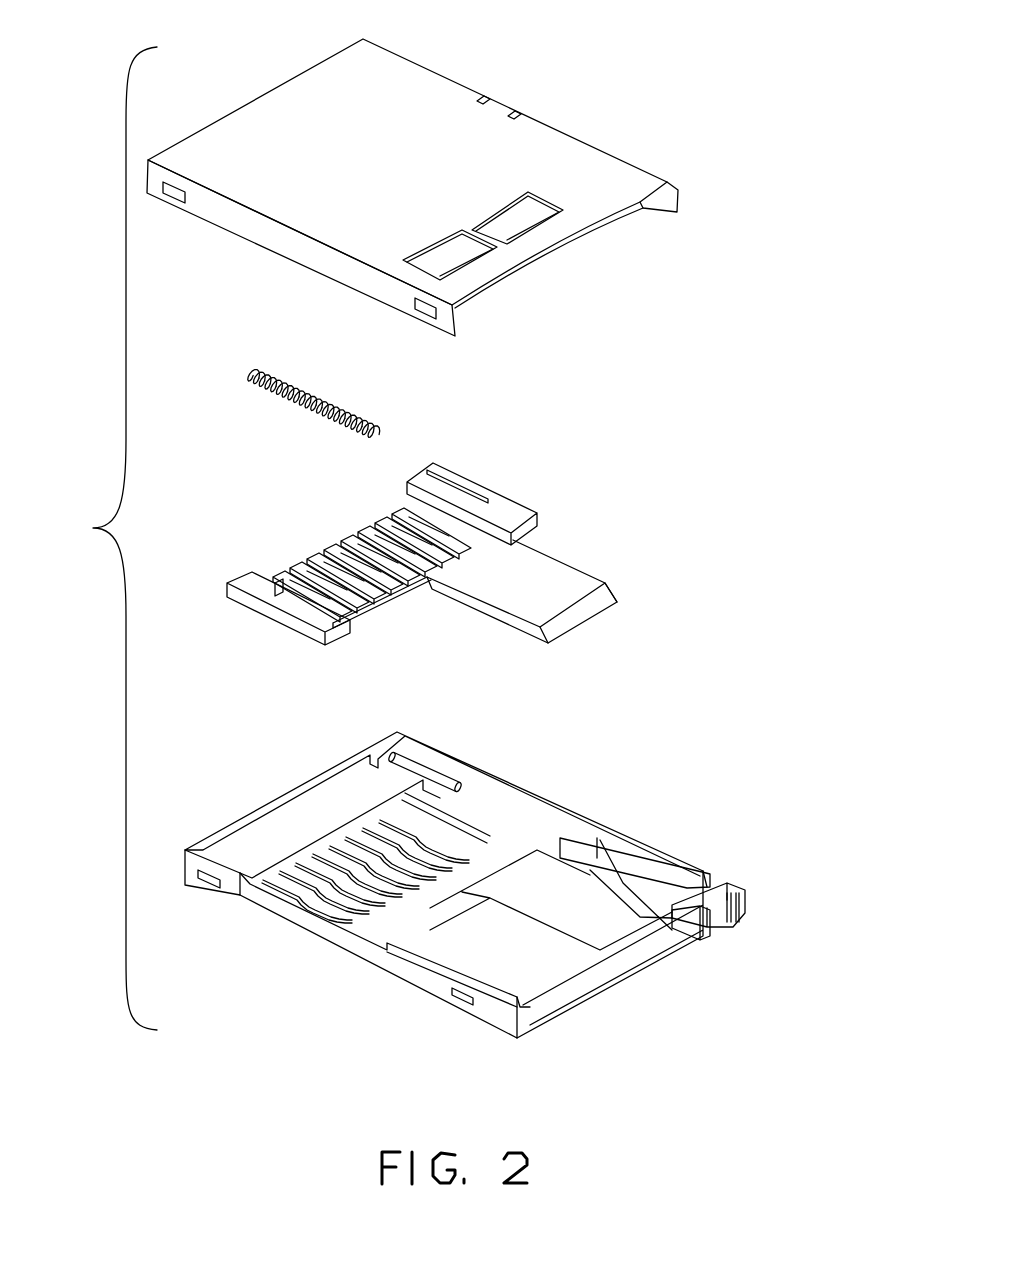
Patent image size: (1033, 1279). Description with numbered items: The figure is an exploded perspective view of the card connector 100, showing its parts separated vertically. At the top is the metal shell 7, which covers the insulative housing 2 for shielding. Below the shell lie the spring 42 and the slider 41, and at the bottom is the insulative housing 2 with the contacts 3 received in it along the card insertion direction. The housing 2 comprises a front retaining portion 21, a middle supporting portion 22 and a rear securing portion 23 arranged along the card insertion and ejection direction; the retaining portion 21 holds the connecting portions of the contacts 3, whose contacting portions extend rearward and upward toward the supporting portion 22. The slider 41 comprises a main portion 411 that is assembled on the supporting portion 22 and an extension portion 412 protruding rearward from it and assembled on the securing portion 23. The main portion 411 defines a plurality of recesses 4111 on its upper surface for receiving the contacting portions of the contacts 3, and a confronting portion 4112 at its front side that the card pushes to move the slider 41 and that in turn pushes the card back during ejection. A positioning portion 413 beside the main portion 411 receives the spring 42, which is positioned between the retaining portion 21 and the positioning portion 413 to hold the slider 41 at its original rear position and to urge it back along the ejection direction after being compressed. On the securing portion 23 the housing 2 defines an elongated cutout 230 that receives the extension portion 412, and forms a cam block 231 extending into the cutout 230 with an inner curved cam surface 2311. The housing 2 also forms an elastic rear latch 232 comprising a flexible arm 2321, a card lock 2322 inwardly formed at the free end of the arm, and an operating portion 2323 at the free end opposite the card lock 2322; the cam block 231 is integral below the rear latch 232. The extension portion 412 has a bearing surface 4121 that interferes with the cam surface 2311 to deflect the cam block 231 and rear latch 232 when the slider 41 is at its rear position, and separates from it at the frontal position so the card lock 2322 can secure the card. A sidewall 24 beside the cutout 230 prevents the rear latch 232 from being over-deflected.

The card connector 100 is at (100, 538).
The metal shell 7 is at (509, 68).
The spring 42 is at (334, 380).
The slider 41 is at (440, 536).
The main portion 411 is at (252, 562).
The recesses 4111 is at (415, 530).
The confronting portion 4112 is at (278, 592).
The extension portion 412 is at (576, 579).
The bearing surface 4121 is at (600, 593).
The positioning portion 413 is at (513, 510).
The insulative housing 2 is at (522, 910).
The front retaining portion 21 is at (355, 790).
The middle supporting portion 22 is at (343, 933).
The contacts 3 is at (300, 893).
The sidewall 24 is at (620, 837).
The rear securing portion 23 is at (645, 924).
The elongated cutout 230 is at (583, 920).
The inner curved cam surface 2311 is at (640, 917).
The cam block 231 is at (683, 933).
The elastic rear latch 232 is at (710, 840).
The flexible arm 2321 is at (630, 868).
The card lock 2322 is at (697, 913).
The operating portion 2323 is at (740, 900).